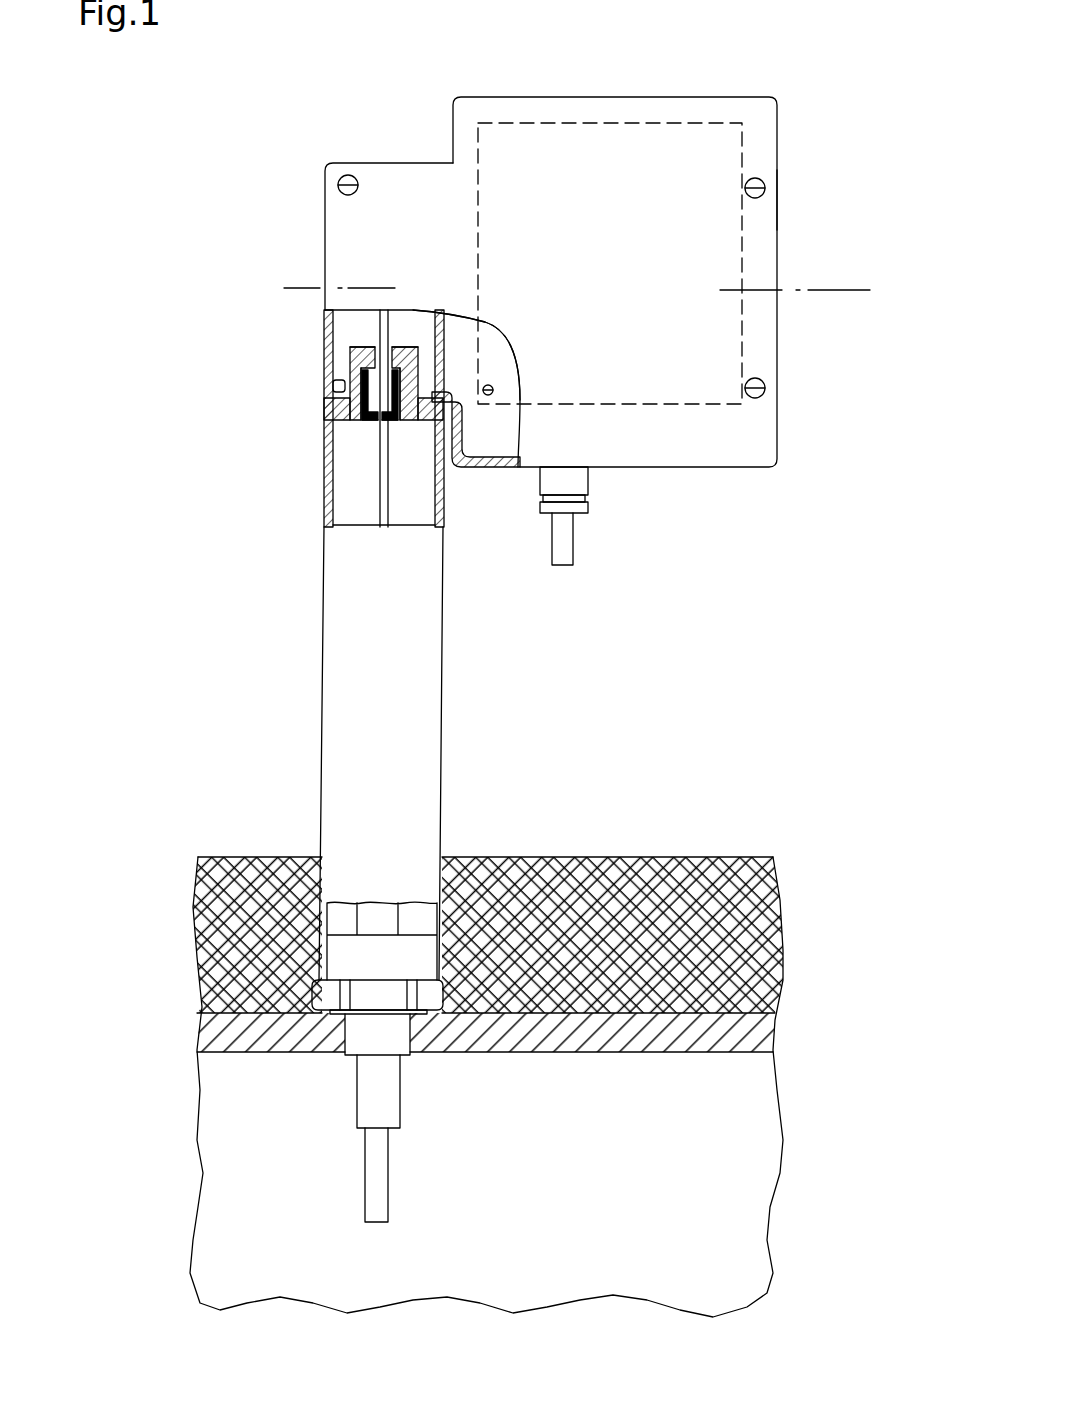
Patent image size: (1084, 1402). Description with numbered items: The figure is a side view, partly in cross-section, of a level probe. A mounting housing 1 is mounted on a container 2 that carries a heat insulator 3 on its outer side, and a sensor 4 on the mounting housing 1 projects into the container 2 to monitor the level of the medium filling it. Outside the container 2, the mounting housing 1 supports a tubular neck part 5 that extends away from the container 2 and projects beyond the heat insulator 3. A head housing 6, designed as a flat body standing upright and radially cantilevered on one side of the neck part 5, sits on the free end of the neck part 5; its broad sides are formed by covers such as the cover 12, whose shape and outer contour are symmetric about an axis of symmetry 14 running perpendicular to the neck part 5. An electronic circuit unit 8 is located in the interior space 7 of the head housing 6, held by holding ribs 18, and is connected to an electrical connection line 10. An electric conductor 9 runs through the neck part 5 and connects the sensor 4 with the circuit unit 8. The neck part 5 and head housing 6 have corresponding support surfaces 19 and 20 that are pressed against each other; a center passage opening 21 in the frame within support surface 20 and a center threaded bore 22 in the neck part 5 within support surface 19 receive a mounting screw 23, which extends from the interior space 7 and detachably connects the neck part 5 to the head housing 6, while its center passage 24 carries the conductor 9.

The mounting housing 1 is at (328, 997).
The container 2 is at (702, 1033).
The heat insulator 3 is at (740, 932).
The sensor 4 is at (377, 1178).
The tubular neck part 5 is at (418, 747).
The head housing 6 is at (555, 97).
The interior space 7 is at (452, 332).
The electronic circuit unit 8 is at (670, 123).
The electric conductor 9 is at (386, 520).
The electrical connection line 10 is at (565, 542).
The cover 12 is at (778, 200).
The axis of symmetry 14 is at (835, 292).
The holding ribs 18 is at (453, 467).
The support surface 19 is at (323, 420).
The support surface 20 is at (336, 386).
The center passage opening 21 is at (345, 390).
The center threaded bore 22 is at (352, 402).
The mounting screw 23 is at (355, 350).
The center passage 24 is at (368, 404).